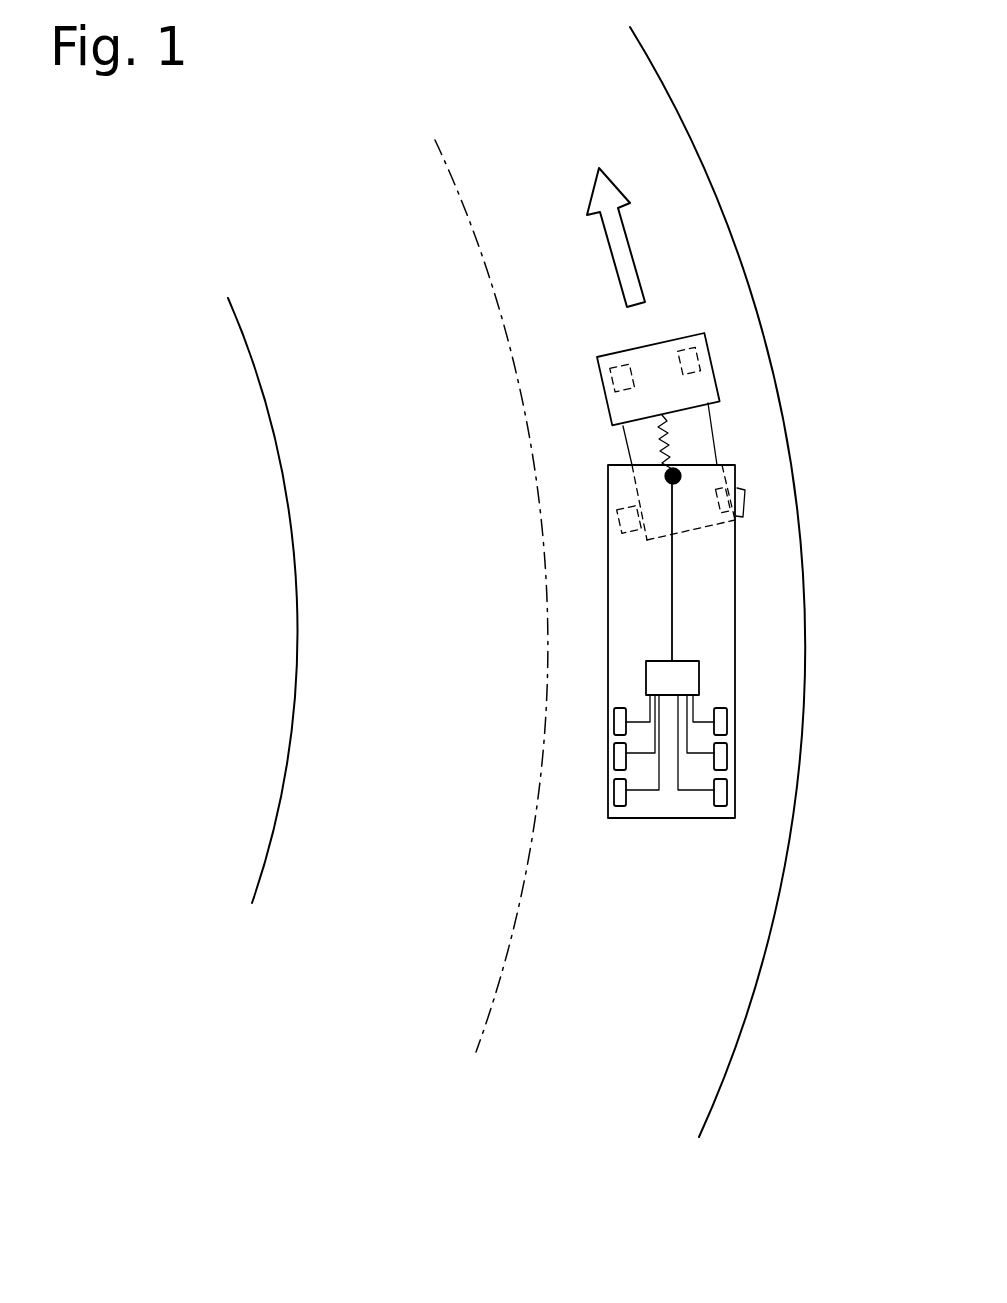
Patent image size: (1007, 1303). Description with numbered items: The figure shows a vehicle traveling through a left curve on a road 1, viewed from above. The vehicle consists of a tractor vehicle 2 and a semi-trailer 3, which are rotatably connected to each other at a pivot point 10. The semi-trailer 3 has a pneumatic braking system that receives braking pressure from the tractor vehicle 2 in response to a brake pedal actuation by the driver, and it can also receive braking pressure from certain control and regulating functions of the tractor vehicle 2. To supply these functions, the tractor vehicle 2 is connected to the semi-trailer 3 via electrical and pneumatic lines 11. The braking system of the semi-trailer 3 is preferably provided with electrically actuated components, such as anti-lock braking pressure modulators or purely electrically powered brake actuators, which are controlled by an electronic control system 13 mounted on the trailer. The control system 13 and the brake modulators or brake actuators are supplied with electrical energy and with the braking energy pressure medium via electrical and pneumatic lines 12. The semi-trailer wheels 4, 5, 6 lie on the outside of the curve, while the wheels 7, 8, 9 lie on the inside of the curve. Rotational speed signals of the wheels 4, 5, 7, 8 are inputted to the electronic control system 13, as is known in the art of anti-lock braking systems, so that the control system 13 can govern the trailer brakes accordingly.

The road 1 is at (638, 948).
The tractor vehicle 2 is at (705, 333).
The semi-trailer 3 is at (608, 609).
The wheel 4 is at (727, 783).
The wheel 5 is at (727, 746).
The wheel 6 is at (727, 710).
The wheel 7 is at (614, 793).
The wheel 8 is at (614, 753).
The wheel 9 is at (614, 720).
The pivot point 10 is at (680, 467).
The electrical and pneumatic lines 11 is at (673, 470).
The electrical and pneumatic lines 12 is at (675, 597).
The electronic control system 13 is at (699, 677).